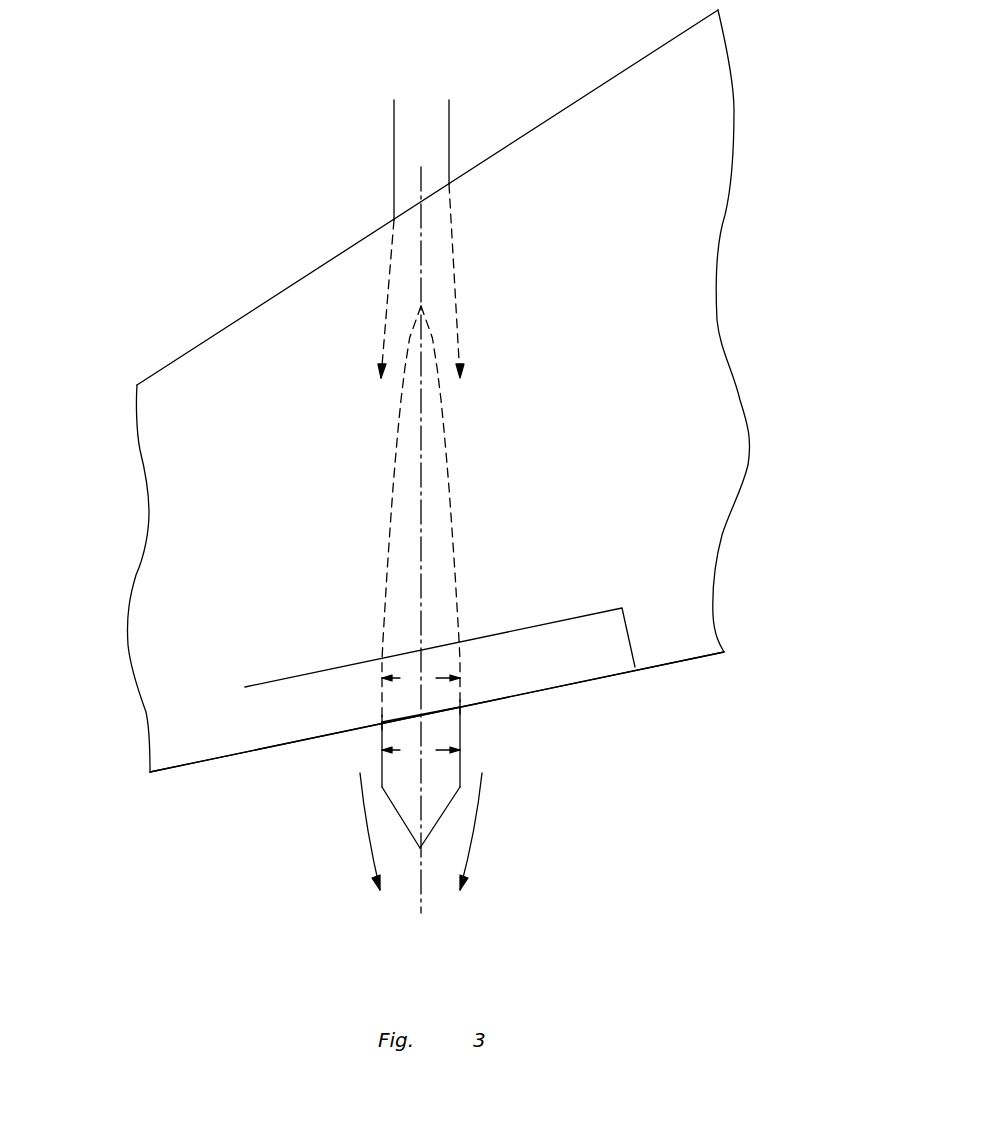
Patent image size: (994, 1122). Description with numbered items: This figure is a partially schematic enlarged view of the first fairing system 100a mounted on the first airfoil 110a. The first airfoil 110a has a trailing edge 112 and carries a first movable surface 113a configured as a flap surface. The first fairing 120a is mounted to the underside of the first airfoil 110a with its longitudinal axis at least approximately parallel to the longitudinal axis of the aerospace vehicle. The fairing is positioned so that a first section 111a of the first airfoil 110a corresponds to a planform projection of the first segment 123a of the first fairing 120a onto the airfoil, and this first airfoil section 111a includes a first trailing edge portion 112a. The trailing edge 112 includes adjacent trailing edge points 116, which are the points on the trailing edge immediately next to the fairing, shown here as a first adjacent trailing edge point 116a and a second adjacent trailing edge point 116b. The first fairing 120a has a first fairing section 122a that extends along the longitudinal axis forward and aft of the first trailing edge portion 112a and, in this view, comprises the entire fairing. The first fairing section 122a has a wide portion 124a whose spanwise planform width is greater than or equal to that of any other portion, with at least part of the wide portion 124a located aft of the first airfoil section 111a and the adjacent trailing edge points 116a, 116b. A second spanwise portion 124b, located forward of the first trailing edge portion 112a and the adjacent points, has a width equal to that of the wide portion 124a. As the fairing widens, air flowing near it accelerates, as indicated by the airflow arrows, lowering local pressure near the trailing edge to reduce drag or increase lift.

The first fairing system 100a is at (325, 177).
The first airfoil 110a is at (562, 150).
The first section of the first airfoil 111a is at (402, 615).
The trailing edge 112 is at (703, 662).
The first trailing edge portion 112a is at (443, 708).
The first movable surface 113a is at (596, 662).
The adjacent trailing edge points 116 is at (592, 883).
The first adjacent trailing edge point 116a is at (460, 708).
The second adjacent trailing edge point 116b is at (382, 722).
The first fairing 120a is at (399, 822).
The first fairing section 122a is at (447, 810).
The first segment of the first fairing 123a is at (382, 643).
The wide portion 124a is at (376, 753).
The second spanwise portion 124b is at (468, 680).